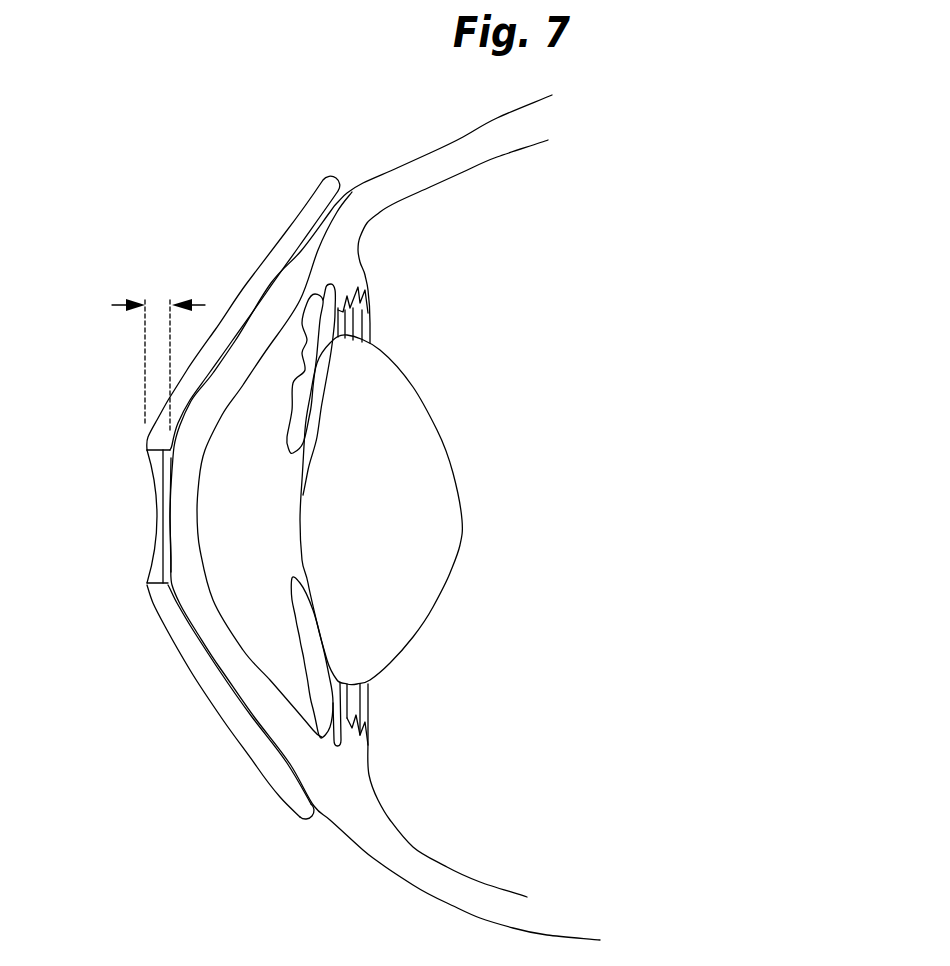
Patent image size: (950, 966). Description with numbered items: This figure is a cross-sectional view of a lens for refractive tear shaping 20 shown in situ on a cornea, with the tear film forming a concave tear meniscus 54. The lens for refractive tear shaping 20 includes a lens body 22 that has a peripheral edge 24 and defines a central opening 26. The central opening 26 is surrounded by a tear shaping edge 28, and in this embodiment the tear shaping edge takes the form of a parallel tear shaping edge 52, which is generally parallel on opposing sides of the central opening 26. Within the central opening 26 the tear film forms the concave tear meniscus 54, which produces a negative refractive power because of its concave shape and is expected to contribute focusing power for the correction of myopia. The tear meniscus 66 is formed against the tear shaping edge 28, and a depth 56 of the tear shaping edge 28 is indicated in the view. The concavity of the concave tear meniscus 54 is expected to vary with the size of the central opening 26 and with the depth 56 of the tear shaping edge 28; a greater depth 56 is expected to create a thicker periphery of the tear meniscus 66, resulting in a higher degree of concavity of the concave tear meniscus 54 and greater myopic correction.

The lens for refractive tear shaping 20 is at (171, 526).
The lens body 22 is at (230, 730).
The peripheral edge 24 is at (305, 816).
The central opening 26 is at (86, 505).
The tear shaping edge 28 is at (147, 463).
The parallel tear shaping edge 52 is at (151, 578).
The concave tear meniscus 54 is at (163, 473).
The depth 56 is at (117, 304).
The tear meniscus 66 is at (172, 471).